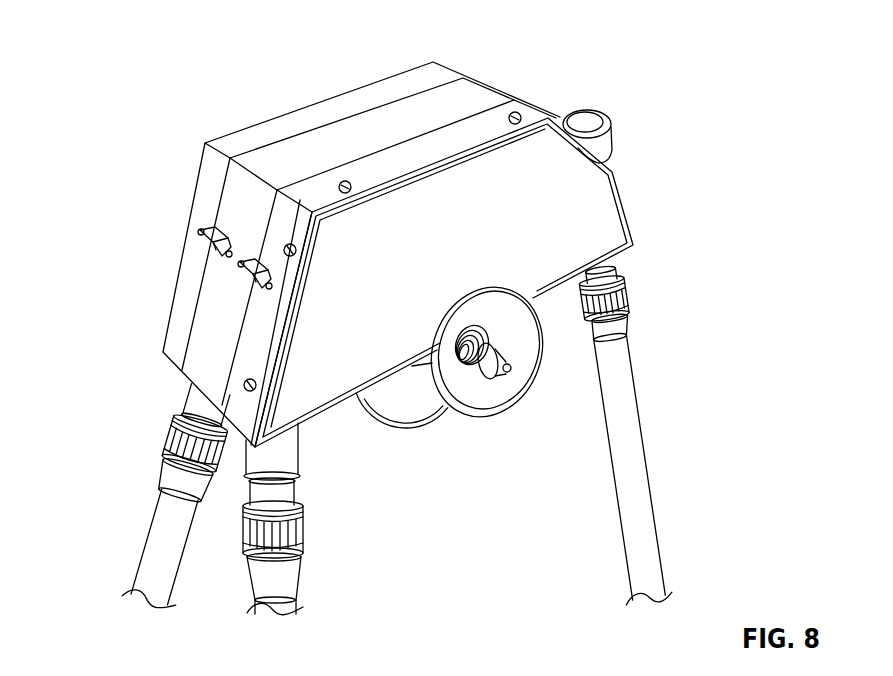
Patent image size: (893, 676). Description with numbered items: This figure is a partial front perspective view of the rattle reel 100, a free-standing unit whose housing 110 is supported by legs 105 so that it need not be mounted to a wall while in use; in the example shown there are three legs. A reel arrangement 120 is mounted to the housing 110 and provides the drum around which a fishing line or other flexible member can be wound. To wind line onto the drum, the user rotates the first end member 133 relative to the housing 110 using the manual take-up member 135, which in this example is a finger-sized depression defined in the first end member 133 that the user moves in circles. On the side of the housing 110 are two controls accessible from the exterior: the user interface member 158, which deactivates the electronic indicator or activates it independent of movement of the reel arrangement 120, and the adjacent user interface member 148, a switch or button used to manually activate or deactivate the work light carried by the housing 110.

The rattle reel 100 is at (186, 156).
The legs 105 is at (147, 537).
The housing 110 is at (488, 84).
The reel arrangement 120 is at (383, 432).
The first end member 133 is at (523, 382).
The manual take-up member 135 is at (465, 363).
The user interface member 148 is at (240, 275).
The user interface member 158 is at (205, 240).